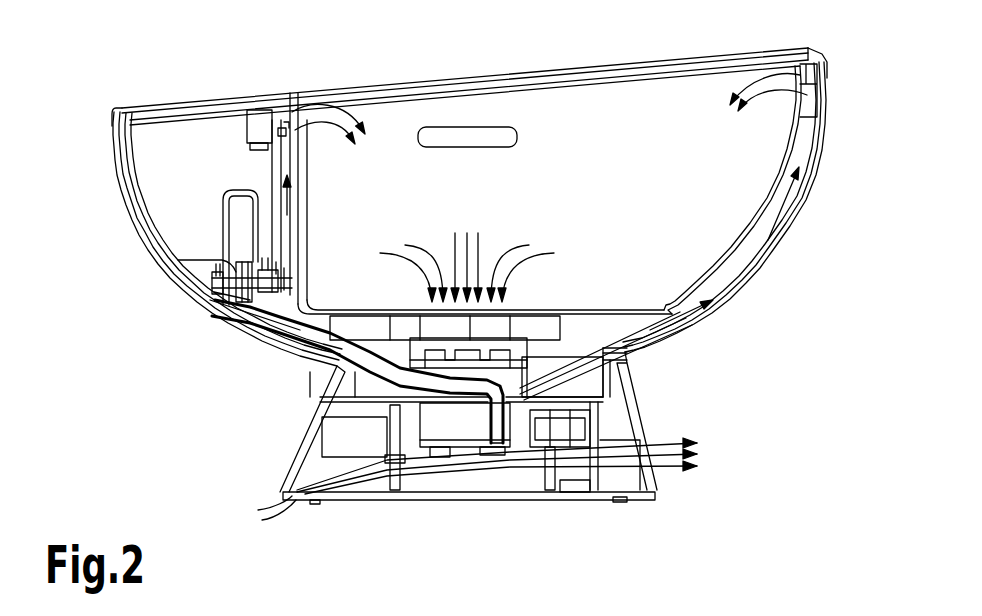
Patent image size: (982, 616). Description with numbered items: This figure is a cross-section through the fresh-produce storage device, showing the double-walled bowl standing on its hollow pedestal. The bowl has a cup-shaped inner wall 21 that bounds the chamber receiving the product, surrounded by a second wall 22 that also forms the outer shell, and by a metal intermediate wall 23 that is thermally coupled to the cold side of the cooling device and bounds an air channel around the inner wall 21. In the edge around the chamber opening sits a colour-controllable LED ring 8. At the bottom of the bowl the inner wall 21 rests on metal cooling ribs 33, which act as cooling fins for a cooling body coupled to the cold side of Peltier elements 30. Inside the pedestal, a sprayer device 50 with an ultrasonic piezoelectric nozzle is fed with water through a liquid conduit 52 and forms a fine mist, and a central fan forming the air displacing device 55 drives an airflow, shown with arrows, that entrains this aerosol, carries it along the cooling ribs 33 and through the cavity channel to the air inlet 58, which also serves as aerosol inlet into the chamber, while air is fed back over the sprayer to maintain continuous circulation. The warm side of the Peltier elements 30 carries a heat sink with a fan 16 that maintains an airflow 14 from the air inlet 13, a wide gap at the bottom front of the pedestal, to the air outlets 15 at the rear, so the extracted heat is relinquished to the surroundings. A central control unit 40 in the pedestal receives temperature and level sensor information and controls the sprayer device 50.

The air inlet 58 is at (817, 52).
The LED ring 8 is at (810, 82).
The inner wall 21 is at (793, 136).
The second wall 22 is at (812, 197).
The intermediate wall 23 is at (752, 263).
The cooling ribs 33 is at (660, 318).
The air displacing device 55 is at (493, 347).
The liquid conduit 52 is at (250, 320).
The control unit 40 is at (325, 437).
The air inlet 13 is at (300, 493).
The airflow 14 is at (300, 497).
The sprayer device 50 is at (466, 420).
The Peltier elements 30 is at (550, 420).
The fan 16 is at (614, 477).
The air outlets 15 is at (640, 465).